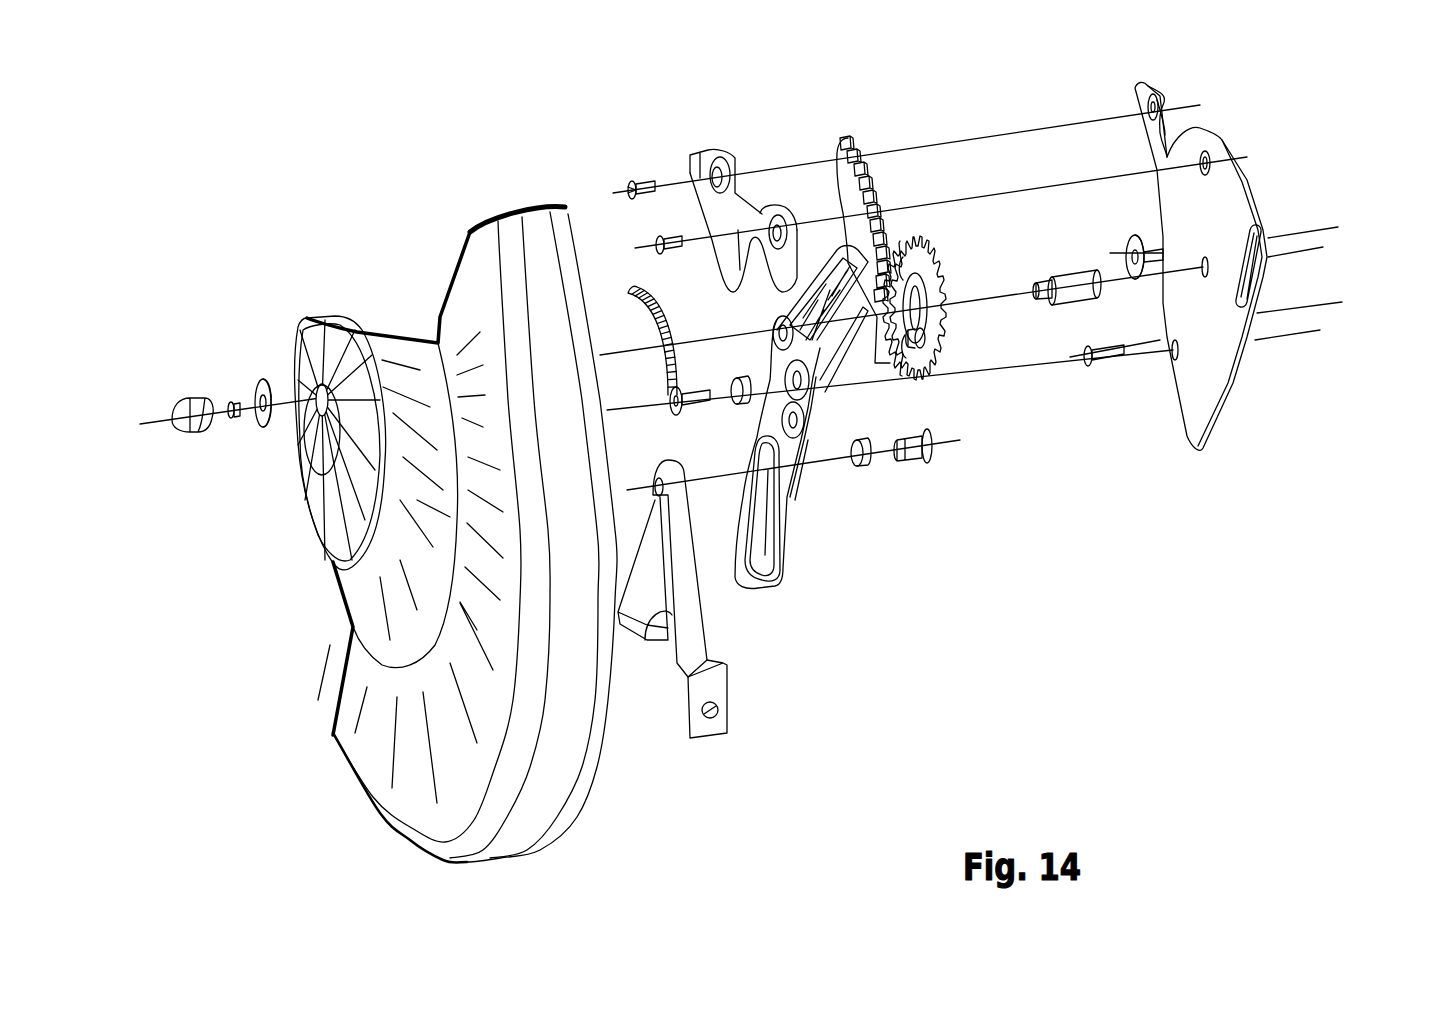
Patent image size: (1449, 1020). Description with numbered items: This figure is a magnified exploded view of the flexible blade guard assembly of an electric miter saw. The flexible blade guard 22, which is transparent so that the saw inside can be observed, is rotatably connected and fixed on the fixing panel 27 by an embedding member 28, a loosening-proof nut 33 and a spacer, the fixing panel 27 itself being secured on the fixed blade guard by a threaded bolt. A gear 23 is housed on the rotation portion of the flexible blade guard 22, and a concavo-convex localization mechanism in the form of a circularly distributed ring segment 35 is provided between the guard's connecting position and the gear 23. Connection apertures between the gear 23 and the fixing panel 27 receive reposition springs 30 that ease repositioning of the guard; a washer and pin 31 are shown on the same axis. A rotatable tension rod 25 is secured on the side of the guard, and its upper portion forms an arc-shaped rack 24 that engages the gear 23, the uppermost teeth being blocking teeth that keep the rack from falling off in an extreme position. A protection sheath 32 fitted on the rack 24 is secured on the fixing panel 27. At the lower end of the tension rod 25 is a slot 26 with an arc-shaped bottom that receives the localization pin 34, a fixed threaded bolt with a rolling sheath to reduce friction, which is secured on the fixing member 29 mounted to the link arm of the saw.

The flexible blade guard 22 is at (570, 723).
The gear 23 is at (940, 277).
The rack 24 is at (858, 138).
The tension rod 25 is at (803, 470).
The slot 26 is at (770, 503).
The fixing panel 27 is at (1213, 337).
The embedding member 28 is at (1050, 297).
The fixing member 29 is at (690, 625).
The reposition spring 30 is at (655, 298).
The washer and pin 31 is at (680, 393).
The protection sheath 32 is at (725, 170).
The loosening-proof nut 33 is at (195, 398).
The localization pin 34 is at (902, 445).
The ring segment 35 is at (933, 377).